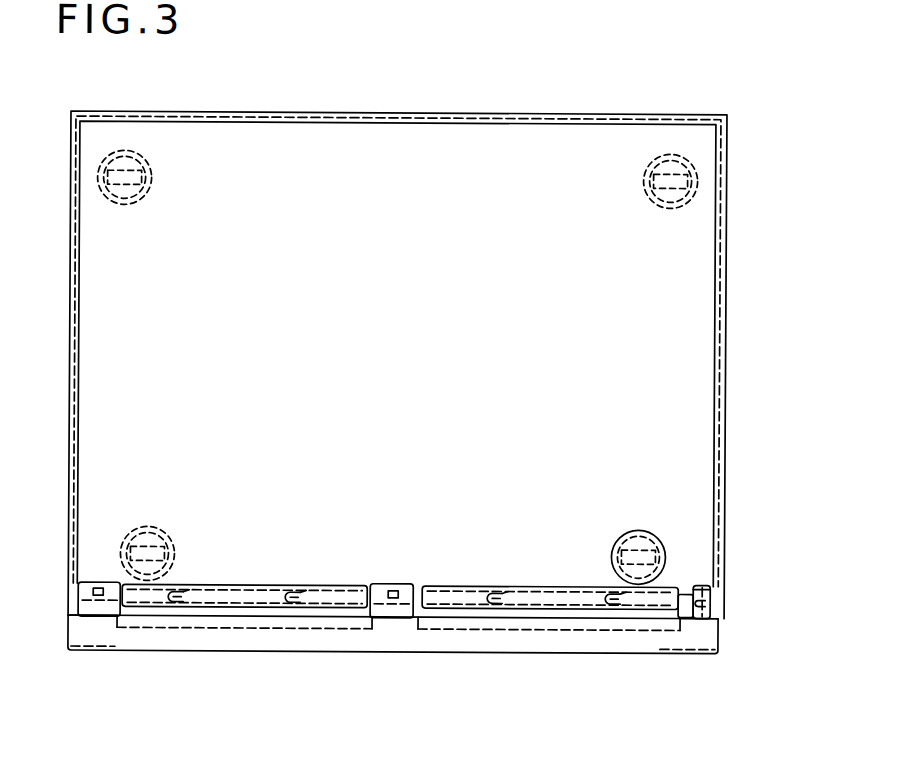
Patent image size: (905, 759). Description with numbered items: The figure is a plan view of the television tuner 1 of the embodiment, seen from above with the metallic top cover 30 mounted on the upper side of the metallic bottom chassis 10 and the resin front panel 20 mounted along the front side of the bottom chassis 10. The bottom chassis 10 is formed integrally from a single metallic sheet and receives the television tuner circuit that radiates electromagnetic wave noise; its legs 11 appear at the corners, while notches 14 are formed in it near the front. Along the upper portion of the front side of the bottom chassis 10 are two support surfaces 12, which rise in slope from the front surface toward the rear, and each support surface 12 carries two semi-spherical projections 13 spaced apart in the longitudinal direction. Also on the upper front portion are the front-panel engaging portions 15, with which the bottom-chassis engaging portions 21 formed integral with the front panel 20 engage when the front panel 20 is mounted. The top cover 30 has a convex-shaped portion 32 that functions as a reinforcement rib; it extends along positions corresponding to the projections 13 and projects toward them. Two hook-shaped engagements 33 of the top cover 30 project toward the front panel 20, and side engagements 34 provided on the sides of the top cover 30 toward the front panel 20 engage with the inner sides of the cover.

The television tuner 1 is at (328, 77).
The bottom chassis 10 is at (297, 114).
The top cover 30 is at (532, 116).
The legs 11 is at (110, 200).
The front panel 20 is at (70, 638).
The hook-shaped engagements 33 is at (243, 628).
The support surfaces 12 is at (211, 586).
The projections 13 is at (176, 603).
The notches 14 is at (178, 602).
The front-panel engaging portions 15 is at (98, 583).
The bottom-chassis engaging portions 21 is at (106, 608).
The convex-shaped portion 32 is at (691, 583).
The side engagements 34 is at (71, 615).